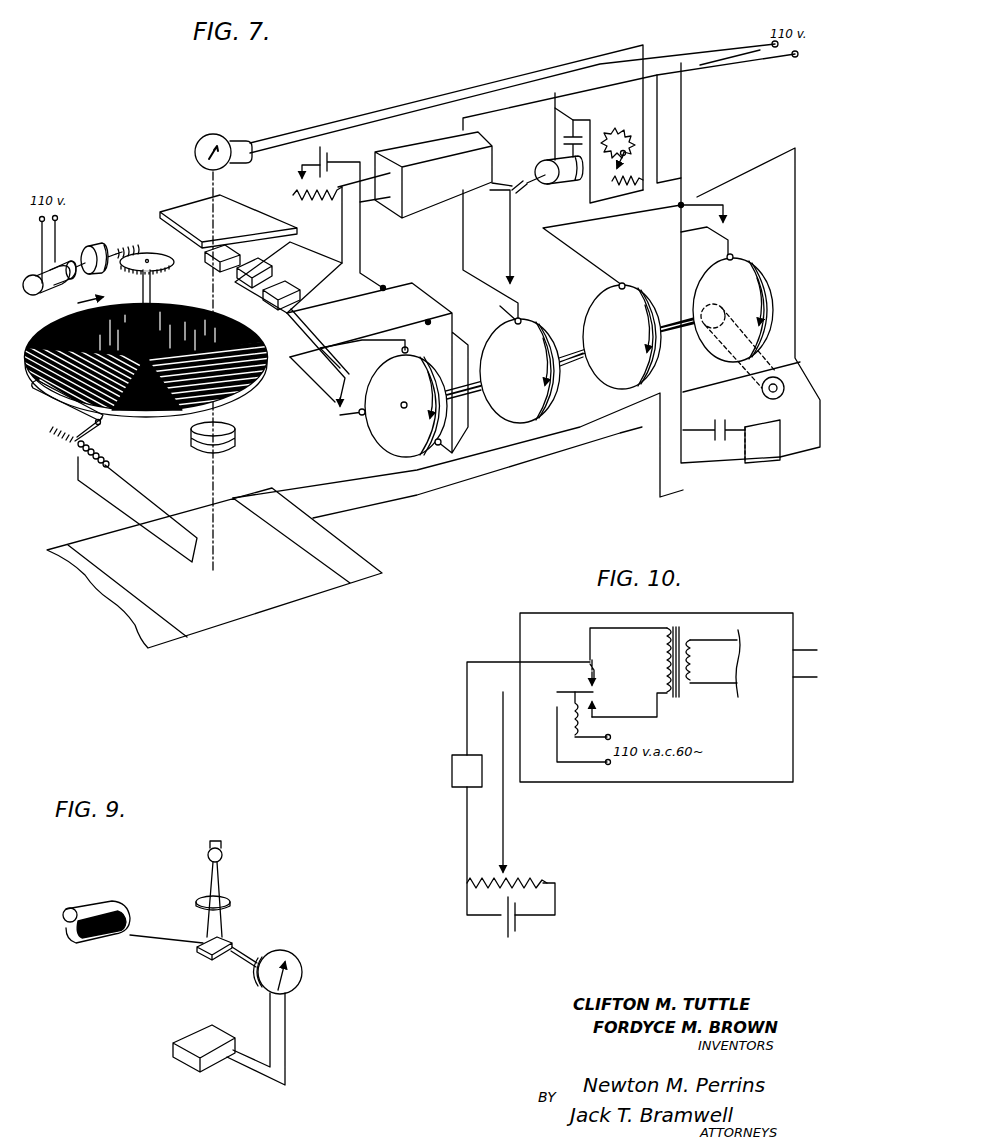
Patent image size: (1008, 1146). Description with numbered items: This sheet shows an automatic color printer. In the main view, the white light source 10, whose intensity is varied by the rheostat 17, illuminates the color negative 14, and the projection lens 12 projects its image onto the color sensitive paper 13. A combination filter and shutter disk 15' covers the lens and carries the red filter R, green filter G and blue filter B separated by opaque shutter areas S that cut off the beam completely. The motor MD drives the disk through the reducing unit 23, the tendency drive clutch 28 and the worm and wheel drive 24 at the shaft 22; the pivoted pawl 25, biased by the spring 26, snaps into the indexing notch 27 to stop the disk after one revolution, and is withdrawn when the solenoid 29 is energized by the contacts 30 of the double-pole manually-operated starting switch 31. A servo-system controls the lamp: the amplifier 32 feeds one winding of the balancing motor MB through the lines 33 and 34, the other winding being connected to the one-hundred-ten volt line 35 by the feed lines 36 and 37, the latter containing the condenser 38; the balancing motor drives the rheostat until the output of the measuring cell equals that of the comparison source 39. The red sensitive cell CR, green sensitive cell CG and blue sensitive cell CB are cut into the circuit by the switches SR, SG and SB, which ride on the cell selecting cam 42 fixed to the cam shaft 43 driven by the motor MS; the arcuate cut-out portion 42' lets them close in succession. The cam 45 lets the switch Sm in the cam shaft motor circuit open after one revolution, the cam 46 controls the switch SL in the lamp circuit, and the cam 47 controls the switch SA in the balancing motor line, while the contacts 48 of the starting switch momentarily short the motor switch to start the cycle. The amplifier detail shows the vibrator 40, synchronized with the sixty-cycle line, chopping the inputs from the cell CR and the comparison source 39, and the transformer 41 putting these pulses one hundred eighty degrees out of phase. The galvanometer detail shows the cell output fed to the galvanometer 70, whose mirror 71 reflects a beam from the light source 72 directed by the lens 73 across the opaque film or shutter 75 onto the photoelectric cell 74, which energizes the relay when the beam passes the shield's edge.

In FIG. 7, the white light source 10 is at (216, 139).
In FIG. 7, the color negative 14 is at (181, 206).
In FIG. 7, the projection lens 12 is at (236, 438).
In FIG. 7, the color sensitive paper 13 is at (235, 612).
In FIG. 7, the shaft 22 is at (141, 281).
In FIG. 7, the reducing unit 23 is at (63, 258).
In FIG. 7, the worm and wheel drive 24 is at (134, 246).
In FIG. 7, the pivoted pawl 25 is at (99, 428).
In FIG. 7, the spring 26 is at (63, 440).
In FIG. 7, the indexing notch 27 is at (31, 410).
In FIG. 7, the tendency drive clutch 28 is at (99, 246).
In FIG. 7, the solenoid 29 is at (110, 465).
In FIG. 7, the contacts 30 is at (754, 466).
In FIG. 7, the double-pole manually-operated starting switch 31 is at (781, 441).
In FIG. 7, the vibrator modulated A. C. amplifier 32 is at (417, 148).
In FIG. 10, the vibrator modulated A. C. amplifier 32 is at (657, 782).
In FIG. 7, the line 33 is at (510, 188).
In FIG. 7, the line 34 is at (509, 248).
In FIG. 7, the 110 v. line 35 is at (718, 68).
In FIG. 7, the feed line 36 is at (555, 127).
In FIG. 7, the feed line 37 is at (588, 118).
In FIG. 7, the condenser 38 is at (564, 140).
In FIG. 7, the comparison source of potential 39 is at (298, 170).
In FIG. 10, the comparison source of potential 39 is at (519, 877).
In FIG. 10, the vibrator 40 is at (557, 720).
In FIG. 10, the transformer 41 is at (683, 694).
In FIG. 7, the cell selecting cam 42 is at (399, 406).
In FIG. 7, the arcuate cut-out portion 42' is at (367, 382).
In FIG. 7, the cam shaft 43 is at (575, 360).
In FIG. 7, the cam 45 is at (750, 287).
In FIG. 7, the cam 46 is at (641, 314).
In FIG. 7, the cam 47 is at (537, 346).
In FIG. 7, the contacts 48 is at (745, 455).
In FIG. 7, the rheostat 17 is at (618, 189).
In FIG. 7, the combination filter and shutter disk 15' is at (255, 403).
In FIG. 7, the motor MD is at (32, 275).
In FIG. 7, the balancing motor MB is at (560, 194).
In FIG. 7, the motor MS is at (784, 390).
In FIG. 7, the blue sensitive cell CB is at (220, 264).
In FIG. 7, the red sensitive cell CR is at (252, 268).
In FIG. 10, the red sensitive cell CR is at (452, 771).
In FIG. 9, the red sensitive cell CR is at (193, 1055).
In FIG. 7, the green sensitive cell CG is at (300, 301).
In FIG. 7, the switch SR is at (393, 354).
In FIG. 7, the switch SB is at (345, 417).
In FIG. 7, the switch SG is at (462, 443).
In FIG. 7, the switch SA is at (514, 290).
In FIG. 7, the switch SL is at (605, 270).
In FIG. 7, the switch Sm is at (722, 216).
In FIG. 7, the opaque shutter areas S is at (52, 325).
In FIG. 7, the blue filter B is at (258, 372).
In FIG. 7, the green filter G is at (108, 398).
In FIG. 7, the red filter R is at (168, 287).
In FIG. 9, the galvanometer 70 is at (302, 972).
In FIG. 9, the mirror 71 is at (228, 942).
In FIG. 9, the light source 72 is at (223, 853).
In FIG. 9, the lens 73 is at (230, 902).
In FIG. 9, the photoelectric cell 74 is at (70, 921).
In FIG. 9, the opaque film or shutter 75 is at (110, 947).